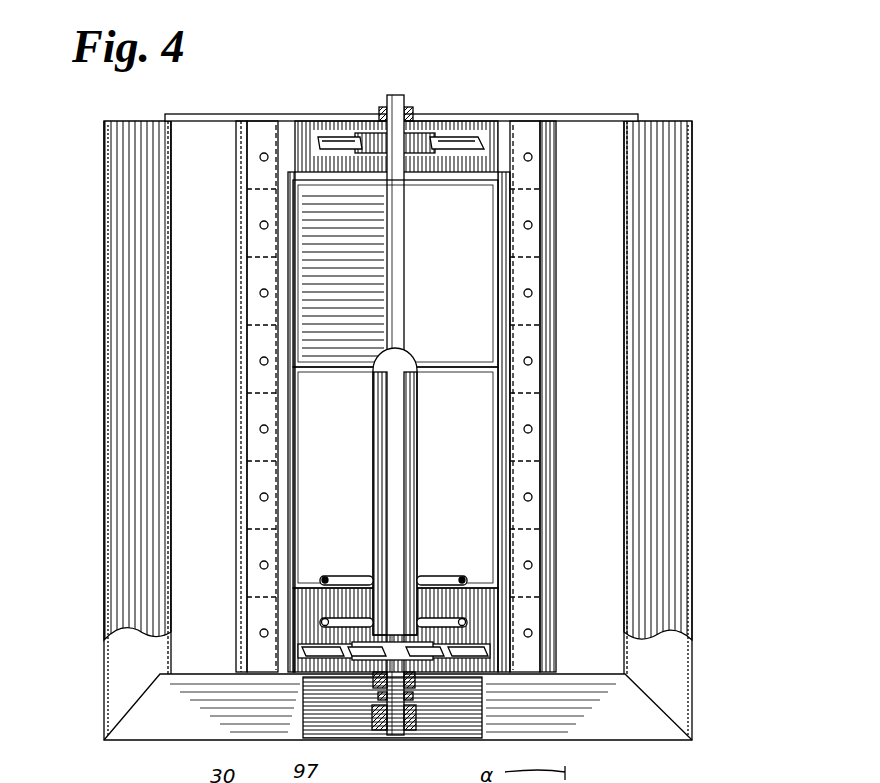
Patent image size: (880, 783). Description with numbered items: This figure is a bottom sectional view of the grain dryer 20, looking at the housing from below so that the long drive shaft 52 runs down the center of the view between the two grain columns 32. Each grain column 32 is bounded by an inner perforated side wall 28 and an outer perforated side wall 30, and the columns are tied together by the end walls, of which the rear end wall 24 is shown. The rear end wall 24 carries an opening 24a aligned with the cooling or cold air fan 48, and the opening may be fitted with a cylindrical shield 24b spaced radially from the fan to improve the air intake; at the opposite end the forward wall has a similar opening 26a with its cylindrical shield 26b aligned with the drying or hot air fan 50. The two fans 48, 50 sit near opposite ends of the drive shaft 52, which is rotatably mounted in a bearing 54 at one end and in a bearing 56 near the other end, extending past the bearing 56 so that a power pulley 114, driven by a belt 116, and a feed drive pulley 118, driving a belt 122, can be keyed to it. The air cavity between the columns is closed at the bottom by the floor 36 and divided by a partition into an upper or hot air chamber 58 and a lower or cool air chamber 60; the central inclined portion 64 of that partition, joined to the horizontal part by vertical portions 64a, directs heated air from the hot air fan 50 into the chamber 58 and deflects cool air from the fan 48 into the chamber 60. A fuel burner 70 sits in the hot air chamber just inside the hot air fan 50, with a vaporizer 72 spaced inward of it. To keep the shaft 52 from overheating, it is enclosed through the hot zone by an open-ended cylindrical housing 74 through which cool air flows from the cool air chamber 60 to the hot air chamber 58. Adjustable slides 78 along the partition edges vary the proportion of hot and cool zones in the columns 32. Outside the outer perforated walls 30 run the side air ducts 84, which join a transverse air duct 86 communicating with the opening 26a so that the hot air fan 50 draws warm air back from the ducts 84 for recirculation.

The grain dryer 20 is at (692, 86).
The rear end wall 24 is at (445, 118).
The opening 24a is at (428, 118).
The cylindrical shield 24b is at (450, 175).
The opening 26a is at (462, 680).
The cylindrical shield 26b is at (306, 588).
The inner perforated side wall 28 is at (236, 413).
The outer perforated side wall 30 is at (171, 350).
The grain column 32 is at (392, 249).
The floor 36 is at (395, 273).
The cooling or cold air fan 48 is at (470, 137).
The drying or hot air fan 50 is at (303, 690).
The drive shaft 52 is at (390, 215).
The bearing 54 is at (386, 107).
The bearing 56 is at (373, 680).
The upper or hot air chamber 58 is at (312, 506).
The lower or cool air chamber 60 is at (345, 249).
The central inclined portion 64 is at (395, 519).
The vertical portion 64a is at (300, 458).
The fuel burner 70 is at (448, 620).
The vaporizer 72 is at (360, 578).
The cylindrical housing 74 is at (415, 455).
The shield or slide 78 is at (540, 532).
The side air duct 84 is at (104, 660).
The transverse air duct 86 is at (645, 744).
The power pulley 114 is at (412, 730).
The belt 116 is at (372, 715).
The feed drive pulley 118 is at (413, 697).
The belt 122 is at (378, 697).